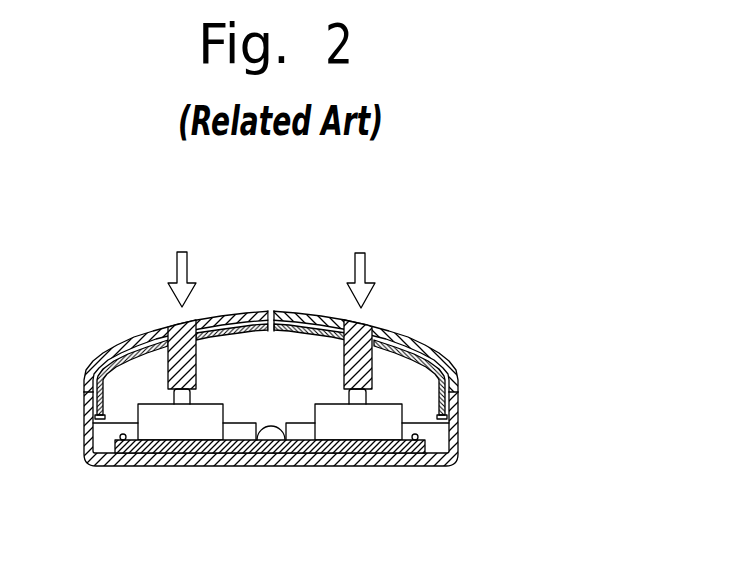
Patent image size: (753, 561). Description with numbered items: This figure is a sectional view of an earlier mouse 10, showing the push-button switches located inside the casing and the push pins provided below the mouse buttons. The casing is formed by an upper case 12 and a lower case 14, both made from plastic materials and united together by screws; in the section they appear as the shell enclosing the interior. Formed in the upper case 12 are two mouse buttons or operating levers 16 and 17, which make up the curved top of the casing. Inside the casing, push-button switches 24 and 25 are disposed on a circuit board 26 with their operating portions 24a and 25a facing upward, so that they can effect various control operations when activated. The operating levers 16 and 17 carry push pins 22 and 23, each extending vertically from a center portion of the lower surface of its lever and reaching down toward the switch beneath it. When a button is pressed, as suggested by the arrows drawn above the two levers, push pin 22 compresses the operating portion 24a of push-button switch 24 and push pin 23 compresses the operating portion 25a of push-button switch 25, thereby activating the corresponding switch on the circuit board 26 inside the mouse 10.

The mouse 10 is at (304, 229).
The upper case 12 is at (457, 401).
The lower case 14 is at (457, 440).
The operating lever 16 is at (122, 343).
The operating lever 17 is at (405, 338).
The push pin 22 is at (190, 368).
The push pin 23 is at (348, 370).
The push-button switch 24 is at (158, 430).
The operating portion 24a is at (182, 404).
The push-button switch 25 is at (382, 430).
The operating portion 25a is at (357, 404).
The circuit board 26 is at (272, 445).